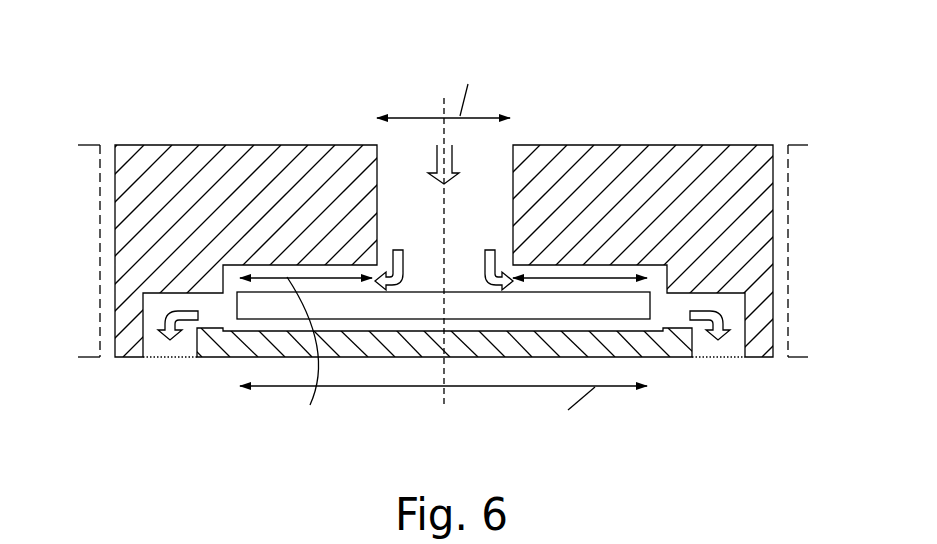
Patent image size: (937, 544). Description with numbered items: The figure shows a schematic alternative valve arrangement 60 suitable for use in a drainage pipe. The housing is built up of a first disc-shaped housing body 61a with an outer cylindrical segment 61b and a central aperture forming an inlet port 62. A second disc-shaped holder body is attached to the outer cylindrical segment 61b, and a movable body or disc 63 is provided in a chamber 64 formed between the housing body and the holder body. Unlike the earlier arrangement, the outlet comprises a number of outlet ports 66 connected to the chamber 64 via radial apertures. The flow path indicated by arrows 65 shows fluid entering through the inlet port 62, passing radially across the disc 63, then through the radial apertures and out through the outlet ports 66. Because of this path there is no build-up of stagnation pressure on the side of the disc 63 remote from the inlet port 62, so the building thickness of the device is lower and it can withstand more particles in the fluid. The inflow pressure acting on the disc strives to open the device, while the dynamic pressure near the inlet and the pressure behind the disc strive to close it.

The valve arrangement 60 is at (251, 88).
The first disc-shaped housing body 61a is at (327, 177).
The outer cylindrical segment 61b is at (130, 313).
The inlet port 62 is at (488, 176).
The movable body or disc 63 is at (582, 303).
The chamber 64 is at (632, 323).
The arrows 65 is at (437, 163).
The outlet ports 66 is at (172, 348).